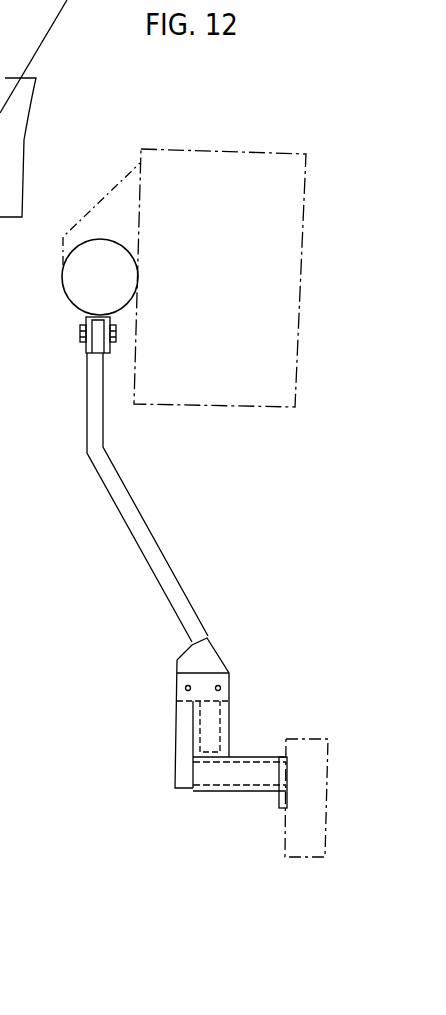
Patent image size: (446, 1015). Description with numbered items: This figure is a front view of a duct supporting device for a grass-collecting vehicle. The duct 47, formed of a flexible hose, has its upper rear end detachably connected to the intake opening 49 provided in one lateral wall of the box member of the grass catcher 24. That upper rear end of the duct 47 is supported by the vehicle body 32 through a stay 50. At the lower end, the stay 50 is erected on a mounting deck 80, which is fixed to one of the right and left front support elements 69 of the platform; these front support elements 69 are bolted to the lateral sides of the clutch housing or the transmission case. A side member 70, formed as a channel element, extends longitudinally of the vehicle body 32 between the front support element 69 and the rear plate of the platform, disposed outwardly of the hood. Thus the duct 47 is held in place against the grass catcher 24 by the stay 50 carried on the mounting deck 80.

The grass catcher 24 is at (208, 151).
The intake opening 49 is at (105, 202).
The duct 47 is at (77, 295).
The stay 50 is at (135, 527).
The mounting deck 80 is at (207, 660).
The side member 70 is at (198, 735).
The front support element 69 is at (240, 790).
The vehicle body 32 is at (313, 743).